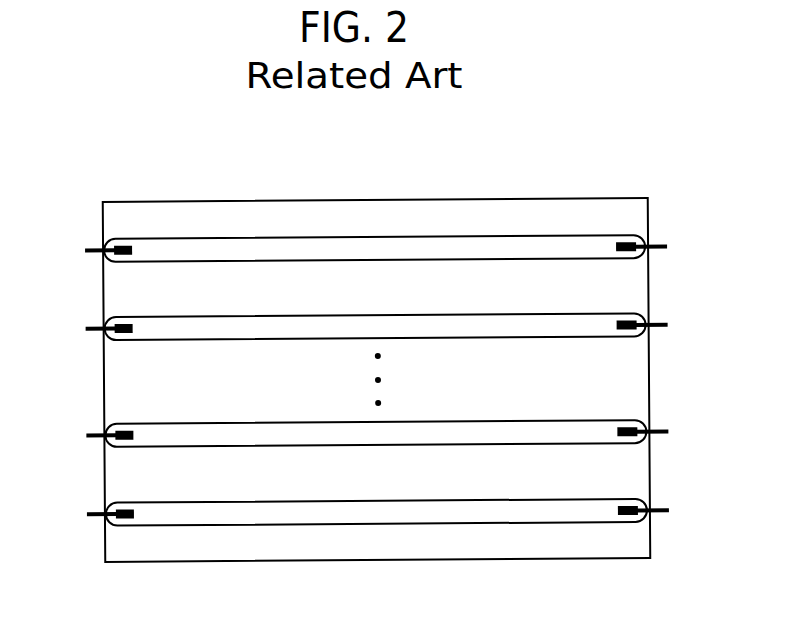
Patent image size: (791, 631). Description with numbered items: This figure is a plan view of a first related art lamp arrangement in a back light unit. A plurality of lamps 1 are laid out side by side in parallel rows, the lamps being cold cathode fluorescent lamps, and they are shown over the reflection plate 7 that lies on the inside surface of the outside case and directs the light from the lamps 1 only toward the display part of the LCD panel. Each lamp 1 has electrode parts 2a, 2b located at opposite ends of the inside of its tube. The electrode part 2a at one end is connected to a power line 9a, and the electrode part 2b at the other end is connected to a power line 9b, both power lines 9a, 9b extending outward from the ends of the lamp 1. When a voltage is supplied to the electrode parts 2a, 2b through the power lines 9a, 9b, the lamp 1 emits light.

The lamp 1 is at (545, 240).
The electrode part 2a is at (123, 258).
The electrode part 2b is at (628, 255).
The reflection plate 7 is at (635, 380).
The power line 9a is at (97, 248).
The power line 9b is at (665, 246).